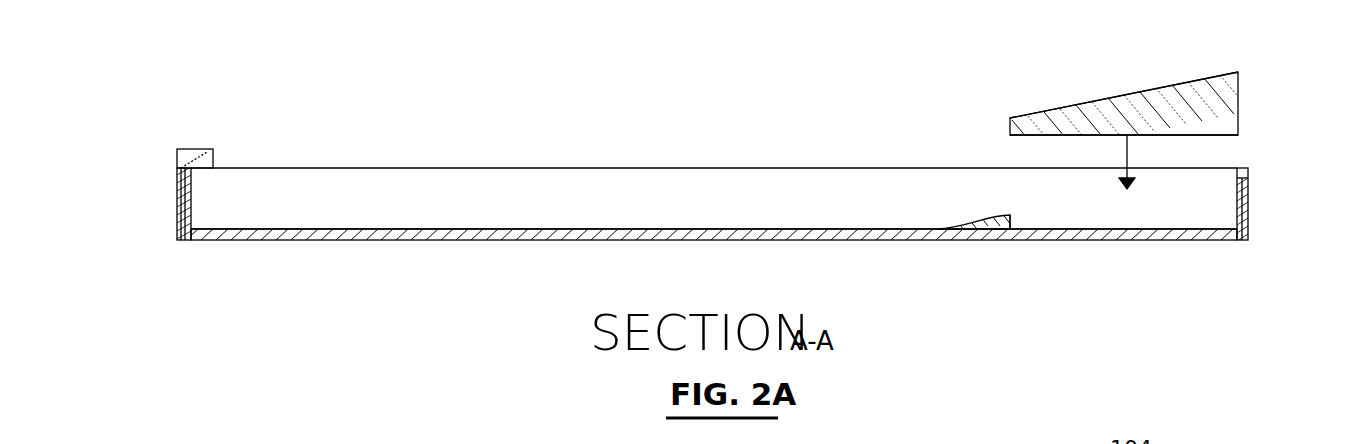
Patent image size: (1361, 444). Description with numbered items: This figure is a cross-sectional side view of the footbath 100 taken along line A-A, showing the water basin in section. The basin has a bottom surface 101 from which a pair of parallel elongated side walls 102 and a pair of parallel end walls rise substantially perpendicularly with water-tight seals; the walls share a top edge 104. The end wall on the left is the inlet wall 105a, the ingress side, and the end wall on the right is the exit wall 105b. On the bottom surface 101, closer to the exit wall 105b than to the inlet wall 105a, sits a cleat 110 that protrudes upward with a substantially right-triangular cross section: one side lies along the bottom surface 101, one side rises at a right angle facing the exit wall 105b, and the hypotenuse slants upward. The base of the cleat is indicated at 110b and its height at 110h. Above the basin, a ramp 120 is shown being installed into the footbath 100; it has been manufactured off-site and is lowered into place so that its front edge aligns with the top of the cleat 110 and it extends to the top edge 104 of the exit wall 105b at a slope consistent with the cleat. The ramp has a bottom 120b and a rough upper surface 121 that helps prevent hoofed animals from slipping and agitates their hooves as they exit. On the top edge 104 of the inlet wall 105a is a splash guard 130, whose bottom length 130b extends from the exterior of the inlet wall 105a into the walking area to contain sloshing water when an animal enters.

The footbath 100 is at (883, 257).
The bottom surface 101 is at (380, 235).
The elongated side walls 102 is at (653, 195).
The top edge 104 is at (340, 167).
The first end wall (inlet wall) 105a is at (181, 204).
The second end wall (exit wall) 105b is at (1247, 185).
The cleat 110 is at (992, 215).
The ramp base 110b is at (984, 240).
The ramp height 110h is at (1010, 215).
The ramp 120 is at (1120, 112).
The wedge bottom surface 120b is at (1158, 135).
The rough upper surface 121 is at (1205, 76).
The splash guard 130 is at (197, 158).
The bottom length 130b is at (198, 167).